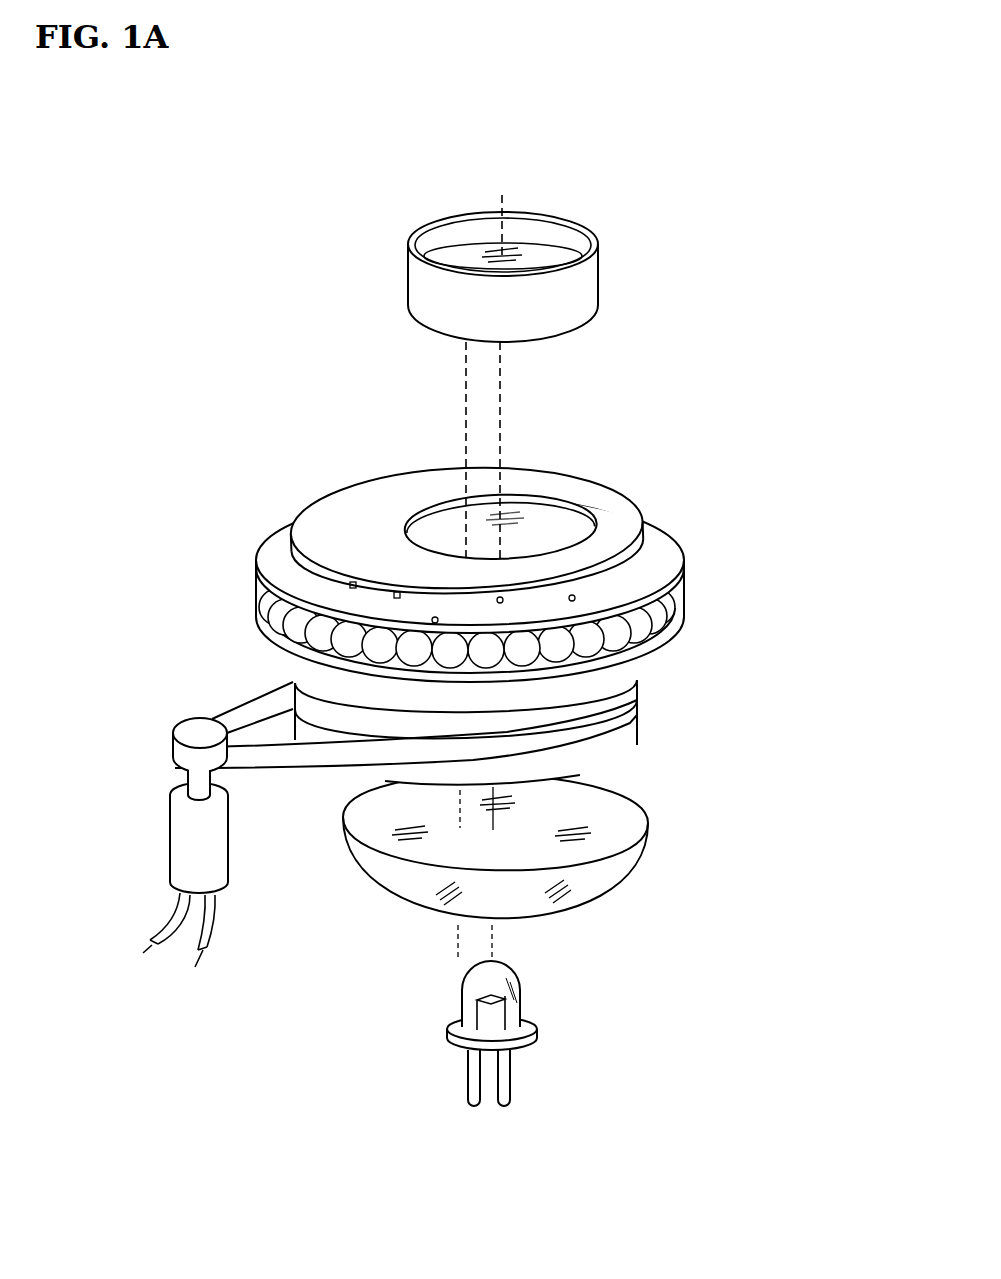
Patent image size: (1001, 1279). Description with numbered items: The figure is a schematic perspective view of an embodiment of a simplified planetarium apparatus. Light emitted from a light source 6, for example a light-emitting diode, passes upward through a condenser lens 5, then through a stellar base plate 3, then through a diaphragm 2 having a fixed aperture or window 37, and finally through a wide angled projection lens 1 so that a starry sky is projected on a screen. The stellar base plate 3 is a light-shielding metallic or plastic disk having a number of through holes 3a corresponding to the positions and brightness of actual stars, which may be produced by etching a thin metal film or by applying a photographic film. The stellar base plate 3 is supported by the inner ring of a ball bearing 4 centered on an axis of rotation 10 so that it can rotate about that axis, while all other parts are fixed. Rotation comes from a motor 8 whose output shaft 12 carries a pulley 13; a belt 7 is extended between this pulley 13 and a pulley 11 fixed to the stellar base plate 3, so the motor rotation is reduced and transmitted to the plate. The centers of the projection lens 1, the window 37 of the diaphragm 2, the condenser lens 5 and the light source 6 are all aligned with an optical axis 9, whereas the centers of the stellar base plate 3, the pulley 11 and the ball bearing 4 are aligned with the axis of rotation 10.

The wide angled projection lens 1 is at (600, 267).
The diaphragm 2 is at (595, 498).
The stellar base plate 3 is at (637, 558).
The through holes 3a is at (660, 578).
The ball bearing 4 is at (660, 608).
The condenser lens 5 is at (602, 819).
The light source 6 is at (523, 988).
The belt 7 is at (640, 702).
The motor 8 is at (178, 848).
The optical axis 9 is at (502, 193).
The axis of rotation 10 is at (460, 405).
The pulley 11 is at (637, 745).
The output shaft 12 is at (197, 792).
The pulley 13 is at (187, 730).
The window 37 is at (533, 497).